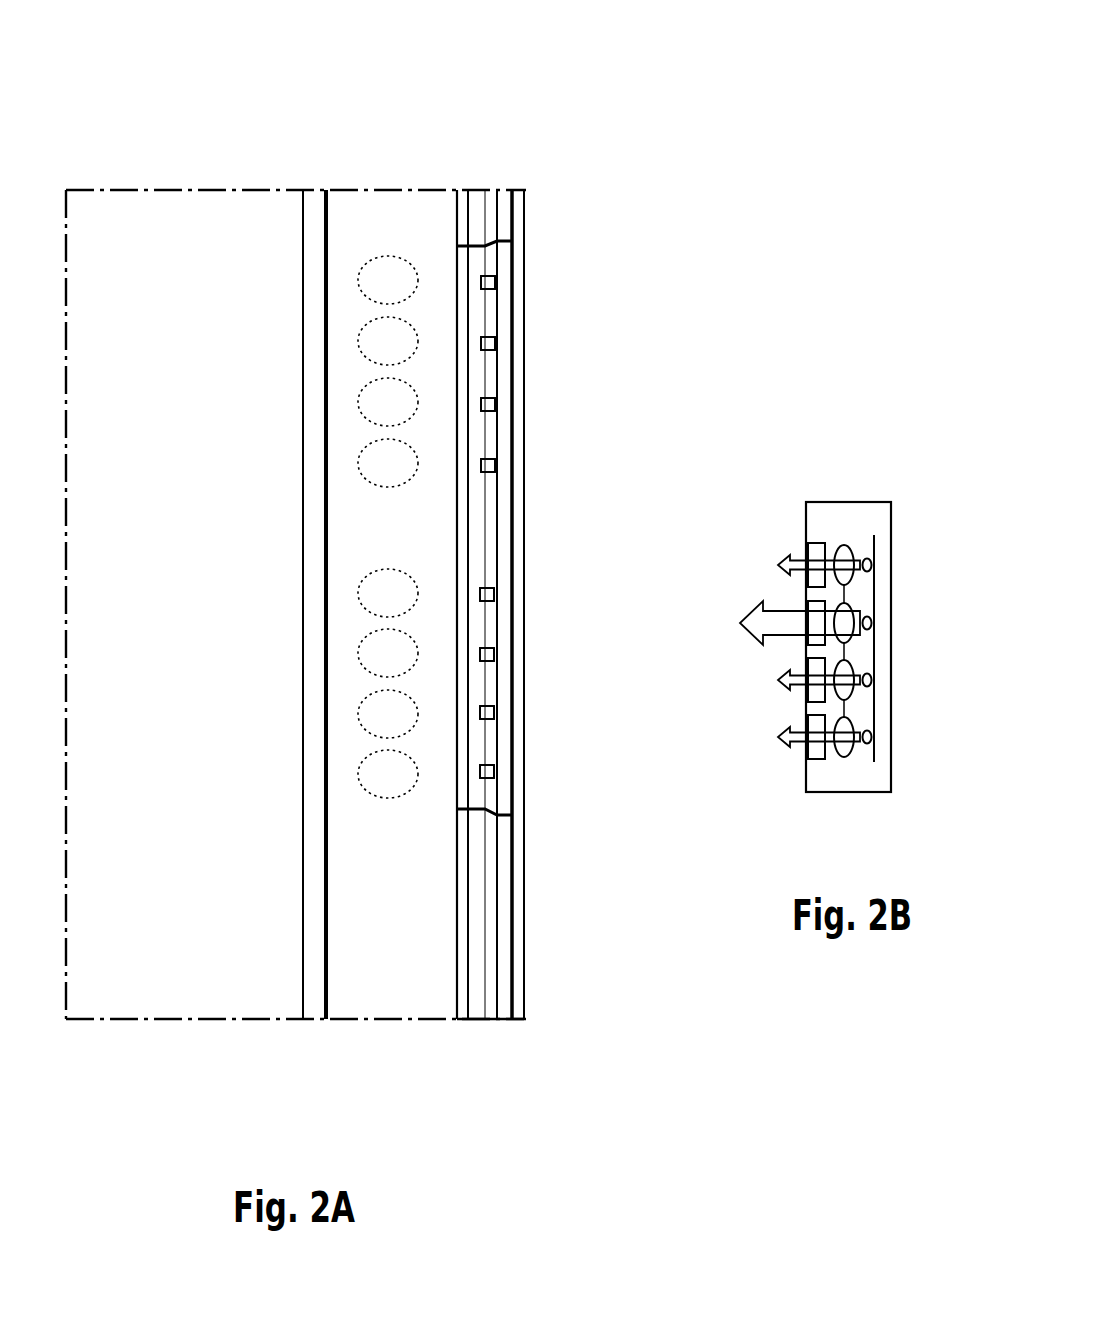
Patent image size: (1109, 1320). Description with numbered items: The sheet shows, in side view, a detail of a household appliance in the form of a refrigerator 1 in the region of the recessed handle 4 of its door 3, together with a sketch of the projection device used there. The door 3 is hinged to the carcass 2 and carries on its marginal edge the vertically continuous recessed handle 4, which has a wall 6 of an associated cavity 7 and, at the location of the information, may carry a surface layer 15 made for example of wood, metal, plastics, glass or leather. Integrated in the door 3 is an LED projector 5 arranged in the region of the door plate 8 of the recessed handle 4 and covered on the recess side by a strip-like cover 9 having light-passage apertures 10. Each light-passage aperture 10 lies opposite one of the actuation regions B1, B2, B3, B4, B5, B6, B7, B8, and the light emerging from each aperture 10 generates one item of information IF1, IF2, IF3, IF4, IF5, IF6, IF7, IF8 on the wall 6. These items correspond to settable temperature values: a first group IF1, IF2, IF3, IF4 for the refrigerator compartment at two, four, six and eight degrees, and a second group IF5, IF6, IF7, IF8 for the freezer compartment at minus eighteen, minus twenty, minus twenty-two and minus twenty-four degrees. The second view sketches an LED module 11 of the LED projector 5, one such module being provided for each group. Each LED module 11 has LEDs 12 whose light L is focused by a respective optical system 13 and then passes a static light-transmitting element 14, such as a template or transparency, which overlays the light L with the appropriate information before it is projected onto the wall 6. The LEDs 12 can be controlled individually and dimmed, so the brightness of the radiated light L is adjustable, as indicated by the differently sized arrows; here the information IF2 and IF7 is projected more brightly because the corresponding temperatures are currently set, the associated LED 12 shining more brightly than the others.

In FIG. 2A, the refrigerator 1 is at (99, 124).
In FIG. 2A, the carcass 2 is at (230, 218).
In FIG. 2A, the door 3 is at (523, 912).
In FIG. 2A, the recessed handle 4 is at (421, 163).
In FIG. 2B, the LED projector 5 is at (845, 577).
In FIG. 2A, the wall 6 is at (340, 559).
In FIG. 2A, the cavity 7 is at (378, 220).
In FIG. 2A, the door plate 8 is at (522, 499).
In FIG. 2A, the strip-like cover 9 is at (472, 512).
In FIG. 2A, the light-passage aperture 10 is at (495, 282).
In FIG. 2B, the LED module 11 is at (838, 481).
In FIG. 2B, the LED 12 is at (872, 563).
In FIG. 2B, the optical system 13 is at (845, 757).
In FIG. 2B, the light-transmitting element 14 is at (817, 748).
In FIG. 2A, the surface layer 15 is at (400, 985).
In FIG. 2B, the light L is at (773, 607).
In FIG. 2A, the information IF1 is at (357, 460).
In FIG. 2A, the information IF2 is at (357, 399).
In FIG. 2A, the information IF3 is at (357, 338).
In FIG. 2A, the information IF4 is at (357, 277).
In FIG. 2A, the information IF5 is at (357, 771).
In FIG. 2A, the information IF6 is at (357, 711).
In FIG. 2A, the information IF7 is at (357, 650).
In FIG. 2A, the information IF8 is at (357, 590).
In FIG. 2A, the actuation region B1 is at (418, 461).
In FIG. 2A, the actuation region B2 is at (418, 400).
In FIG. 2A, the actuation region B3 is at (418, 339).
In FIG. 2A, the actuation region B4 is at (418, 278).
In FIG. 2A, the actuation region B5 is at (418, 772).
In FIG. 2A, the actuation region B6 is at (418, 712).
In FIG. 2A, the actuation region B7 is at (418, 651).
In FIG. 2A, the actuation region B8 is at (418, 591).